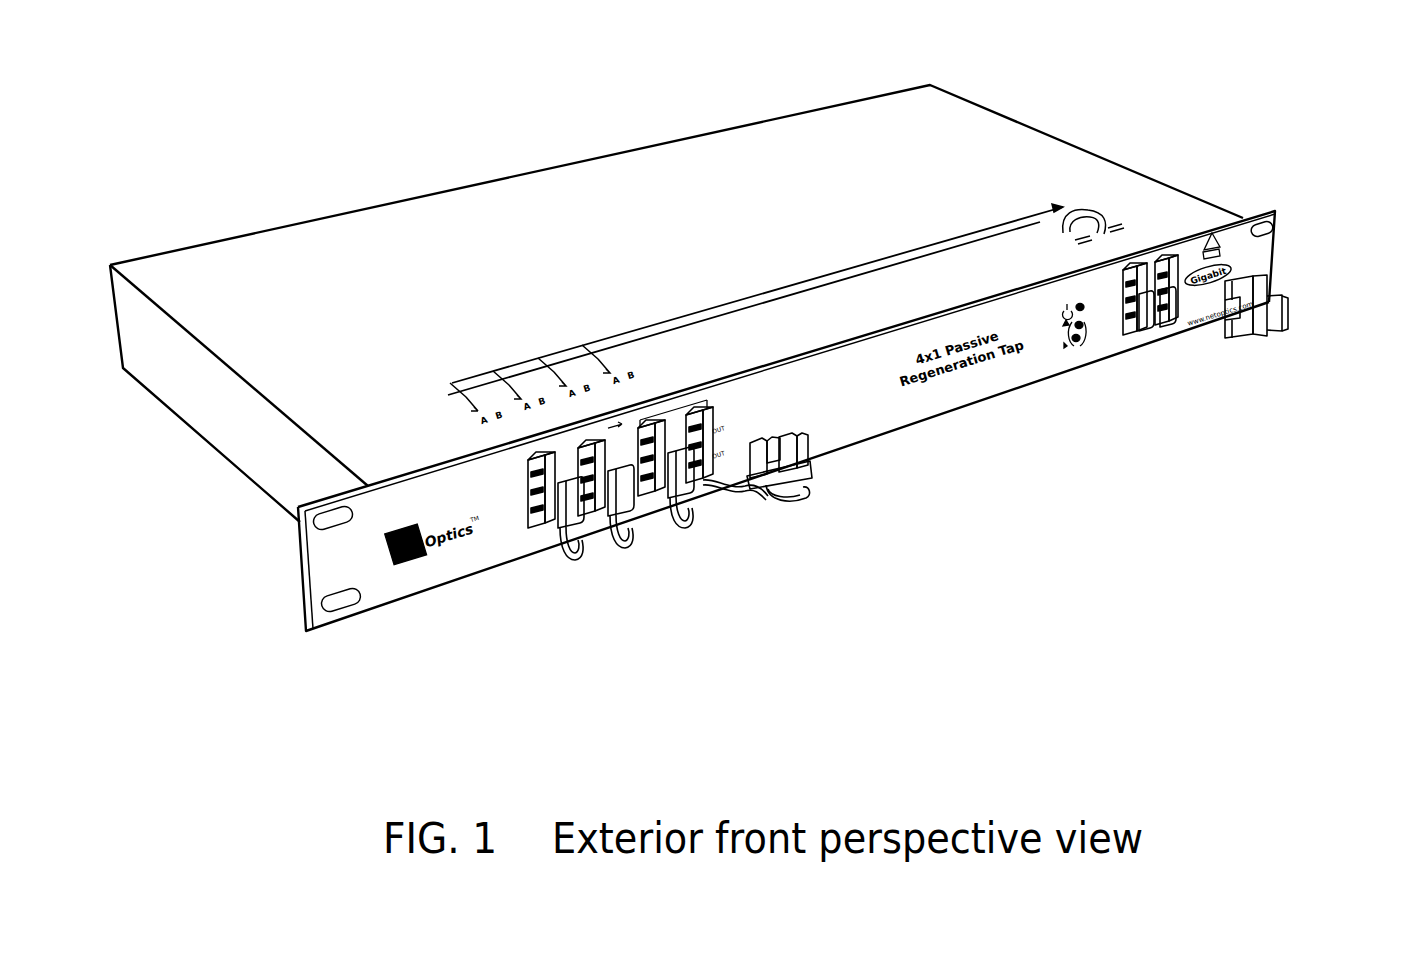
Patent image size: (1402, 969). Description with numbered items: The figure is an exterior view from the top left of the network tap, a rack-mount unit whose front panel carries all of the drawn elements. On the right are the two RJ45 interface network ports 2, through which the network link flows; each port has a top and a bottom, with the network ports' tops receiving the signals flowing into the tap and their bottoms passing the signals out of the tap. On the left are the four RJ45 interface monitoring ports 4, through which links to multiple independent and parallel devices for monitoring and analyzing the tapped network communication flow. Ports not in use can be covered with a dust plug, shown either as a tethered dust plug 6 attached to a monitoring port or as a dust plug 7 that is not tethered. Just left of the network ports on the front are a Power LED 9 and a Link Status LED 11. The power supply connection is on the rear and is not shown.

The RJ45 interface network ports 2 is at (1140, 338).
The RJ45 interface monitoring ports 4 is at (652, 503).
The tethered dust plug 6 is at (800, 503).
The dust plug (not tethered) 7 is at (1257, 340).
The Power LED 9 is at (1085, 311).
The Link Status LED 11 is at (1073, 350).